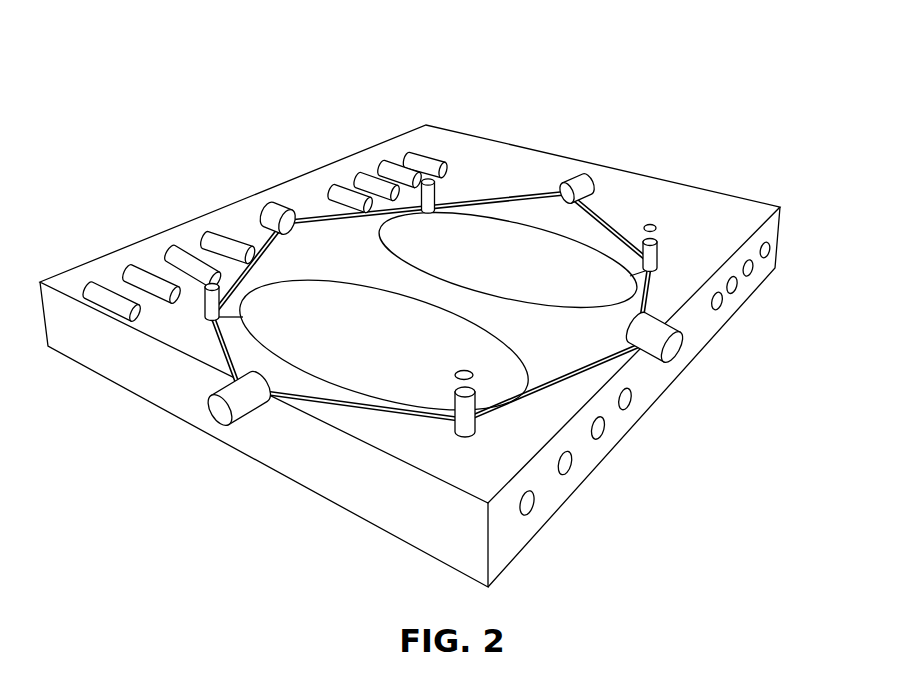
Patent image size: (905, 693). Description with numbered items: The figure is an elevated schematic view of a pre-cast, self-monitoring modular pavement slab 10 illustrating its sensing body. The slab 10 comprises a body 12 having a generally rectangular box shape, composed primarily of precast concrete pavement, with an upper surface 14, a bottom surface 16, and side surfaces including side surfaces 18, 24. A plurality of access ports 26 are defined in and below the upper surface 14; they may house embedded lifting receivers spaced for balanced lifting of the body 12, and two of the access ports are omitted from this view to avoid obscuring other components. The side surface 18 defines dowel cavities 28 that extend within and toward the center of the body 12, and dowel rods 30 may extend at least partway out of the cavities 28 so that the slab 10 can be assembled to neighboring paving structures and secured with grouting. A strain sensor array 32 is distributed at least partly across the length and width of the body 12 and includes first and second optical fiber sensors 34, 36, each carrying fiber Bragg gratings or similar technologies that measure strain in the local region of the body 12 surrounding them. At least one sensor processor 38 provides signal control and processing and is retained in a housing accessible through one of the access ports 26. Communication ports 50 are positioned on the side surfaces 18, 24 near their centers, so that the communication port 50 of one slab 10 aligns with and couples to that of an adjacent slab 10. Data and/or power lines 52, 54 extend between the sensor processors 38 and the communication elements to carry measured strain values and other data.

The self-monitoring modular pavement slab 10 is at (419, 303).
The body 12 is at (419, 339).
The upper surface 14 is at (470, 143).
The bottom surface 16 is at (373, 530).
The side surface 18 is at (770, 228).
The side surface 24 is at (86, 350).
The access port 26 is at (650, 220).
The dowel cavity 28 is at (733, 283).
The dowel rod 30 is at (407, 155).
The strain sensor array 32 is at (428, 303).
The first optical fiber sensor 34 is at (325, 387).
The second optical fiber sensor 36 is at (497, 215).
The sensor processor 38 is at (658, 258).
The communication port 50 is at (277, 203).
The data and/or power line 52 is at (454, 335).
The data and/or power line 54 is at (580, 378).